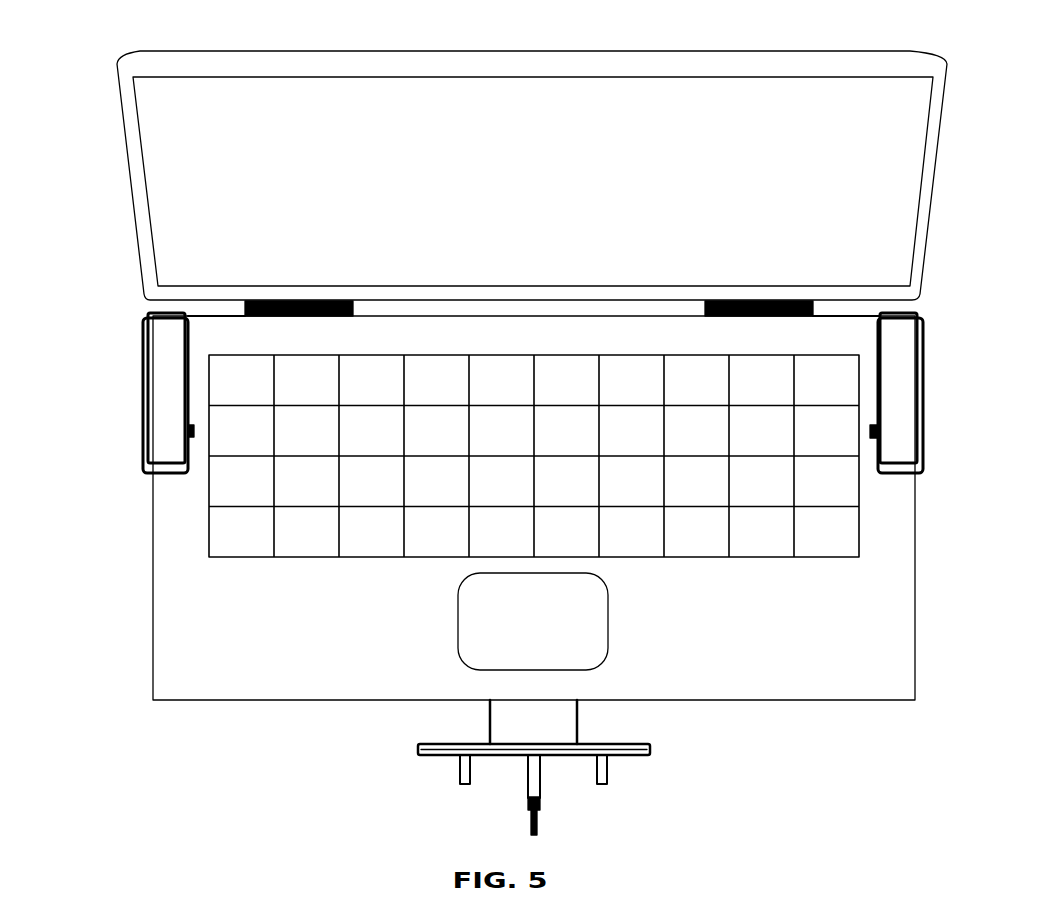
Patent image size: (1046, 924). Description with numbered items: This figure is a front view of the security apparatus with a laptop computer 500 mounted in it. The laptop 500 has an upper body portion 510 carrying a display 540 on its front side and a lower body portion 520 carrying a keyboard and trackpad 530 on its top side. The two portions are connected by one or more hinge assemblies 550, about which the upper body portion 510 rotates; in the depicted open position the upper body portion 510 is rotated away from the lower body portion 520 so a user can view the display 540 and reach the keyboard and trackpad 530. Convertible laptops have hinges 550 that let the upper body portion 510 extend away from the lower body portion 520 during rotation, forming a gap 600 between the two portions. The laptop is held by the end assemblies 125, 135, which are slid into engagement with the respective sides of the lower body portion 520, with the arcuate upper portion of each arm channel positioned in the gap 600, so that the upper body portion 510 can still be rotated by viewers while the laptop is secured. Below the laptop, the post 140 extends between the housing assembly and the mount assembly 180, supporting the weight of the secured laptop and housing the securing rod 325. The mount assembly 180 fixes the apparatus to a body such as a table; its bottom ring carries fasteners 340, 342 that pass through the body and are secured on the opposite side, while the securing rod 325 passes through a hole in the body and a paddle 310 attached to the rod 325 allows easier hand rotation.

The laptop computer 500 is at (505, 41).
The upper body portion 510 is at (106, 71).
The display 540 is at (498, 182).
The lower body portion 520 is at (132, 335).
The gap 600 is at (210, 304).
The hinge assemblies 550 is at (295, 301).
The end assembly 135 is at (140, 370).
The end assembly 125 is at (922, 437).
The keyboard and trackpad 530 is at (412, 576).
The mount assembly 180 is at (625, 737).
The post 140 is at (502, 733).
The fastener 340 is at (463, 783).
The fastener 342 is at (604, 784).
The securing rod 325 is at (535, 776).
The paddle 310 is at (543, 818).